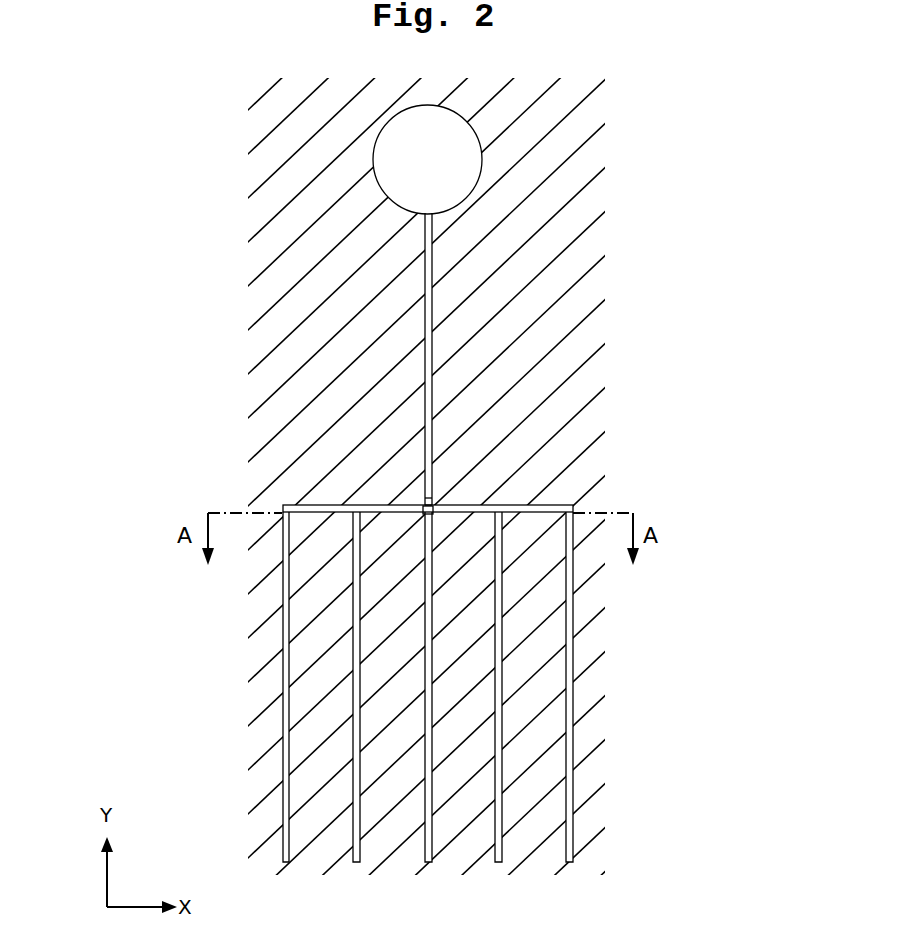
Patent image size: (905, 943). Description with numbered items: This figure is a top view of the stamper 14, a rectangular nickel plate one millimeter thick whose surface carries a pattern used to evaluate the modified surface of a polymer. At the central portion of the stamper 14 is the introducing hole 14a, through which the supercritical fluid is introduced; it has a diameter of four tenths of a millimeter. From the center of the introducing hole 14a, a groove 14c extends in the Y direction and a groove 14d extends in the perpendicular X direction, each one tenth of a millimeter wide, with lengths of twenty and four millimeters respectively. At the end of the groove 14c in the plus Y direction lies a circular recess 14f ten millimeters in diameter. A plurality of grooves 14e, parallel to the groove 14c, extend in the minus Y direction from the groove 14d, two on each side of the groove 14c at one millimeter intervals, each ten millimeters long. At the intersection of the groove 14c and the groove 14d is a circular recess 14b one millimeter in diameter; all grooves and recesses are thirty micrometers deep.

The stamper 14 is at (480, 517).
The introducing hole 14a is at (436, 507).
The circular recess 14b is at (434, 500).
The groove 14c is at (433, 312).
The groove 14d is at (315, 505).
The grooves 14e is at (353, 663).
The circular recess 14f is at (482, 157).